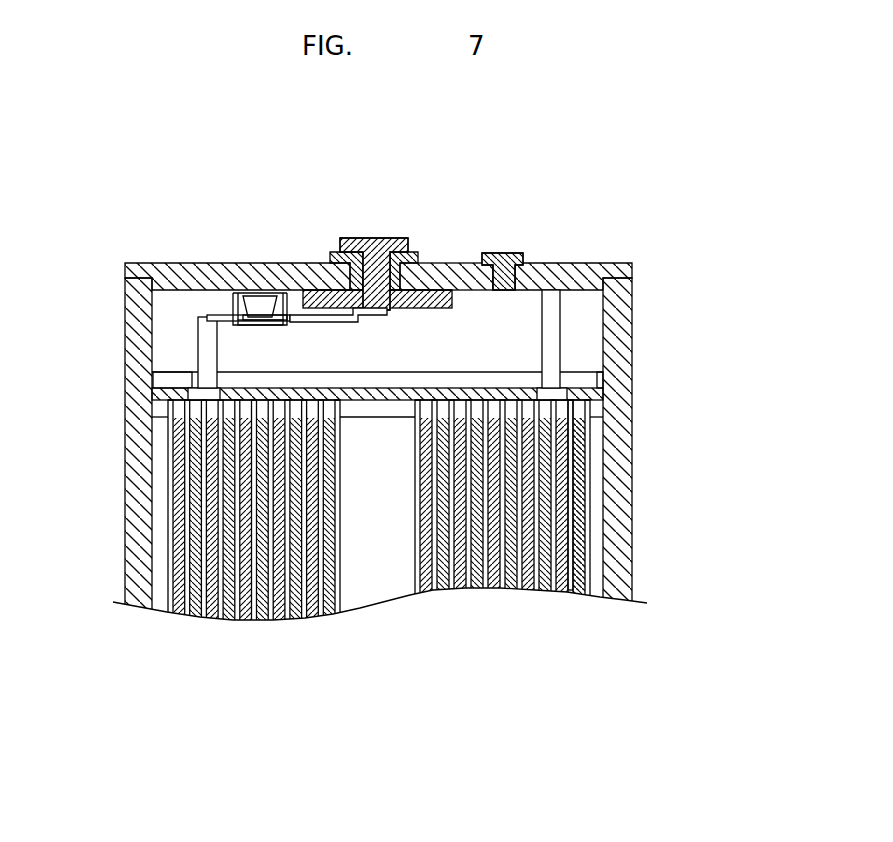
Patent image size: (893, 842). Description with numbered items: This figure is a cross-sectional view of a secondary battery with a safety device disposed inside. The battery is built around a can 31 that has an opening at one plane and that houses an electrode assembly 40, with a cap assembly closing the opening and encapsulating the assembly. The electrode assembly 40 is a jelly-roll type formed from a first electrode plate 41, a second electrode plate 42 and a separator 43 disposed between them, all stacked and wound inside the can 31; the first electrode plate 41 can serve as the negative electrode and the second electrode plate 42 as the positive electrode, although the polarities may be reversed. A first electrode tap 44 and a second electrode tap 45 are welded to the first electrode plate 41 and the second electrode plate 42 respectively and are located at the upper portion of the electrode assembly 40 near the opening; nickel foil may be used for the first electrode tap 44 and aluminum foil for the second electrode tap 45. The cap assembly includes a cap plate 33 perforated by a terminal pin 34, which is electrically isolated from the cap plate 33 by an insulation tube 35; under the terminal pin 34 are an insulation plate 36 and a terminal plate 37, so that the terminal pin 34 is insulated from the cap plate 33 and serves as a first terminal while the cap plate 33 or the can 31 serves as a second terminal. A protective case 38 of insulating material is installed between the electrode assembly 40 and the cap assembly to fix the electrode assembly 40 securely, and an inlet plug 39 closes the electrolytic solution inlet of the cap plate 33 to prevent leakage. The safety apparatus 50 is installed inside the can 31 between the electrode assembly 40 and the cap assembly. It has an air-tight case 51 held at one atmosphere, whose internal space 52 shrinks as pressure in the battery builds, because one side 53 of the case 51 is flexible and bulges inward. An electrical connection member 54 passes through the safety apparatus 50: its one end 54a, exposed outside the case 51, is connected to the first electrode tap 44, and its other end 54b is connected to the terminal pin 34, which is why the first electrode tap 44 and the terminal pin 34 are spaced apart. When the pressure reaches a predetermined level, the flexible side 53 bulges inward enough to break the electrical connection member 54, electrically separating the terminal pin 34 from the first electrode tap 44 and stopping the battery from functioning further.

The can 31 is at (620, 463).
The cap plate 33 is at (590, 263).
The terminal pin 34 is at (378, 238).
The insulation tube 35 is at (420, 252).
The insulation plate 36 is at (450, 300).
The terminal plate 37 is at (358, 292).
The protective case 38 is at (597, 398).
The inlet plug 39 is at (500, 253).
The electrode assembly 40 is at (389, 572).
The first electrode plate 41 is at (550, 592).
The second electrode plate 42 is at (573, 592).
The separator 43 is at (563, 592).
The first electrode tap 44 is at (203, 353).
The second electrode tap 45 is at (553, 327).
The safety apparatus 50 is at (223, 300).
The case 51 is at (250, 303).
The space 52 is at (227, 297).
The flexible side 53 is at (263, 326).
The electrical connection member 54 is at (267, 313).
The one end of the electrical connection member 54a is at (232, 317).
The other end of the electrical connection member 54b is at (345, 320).